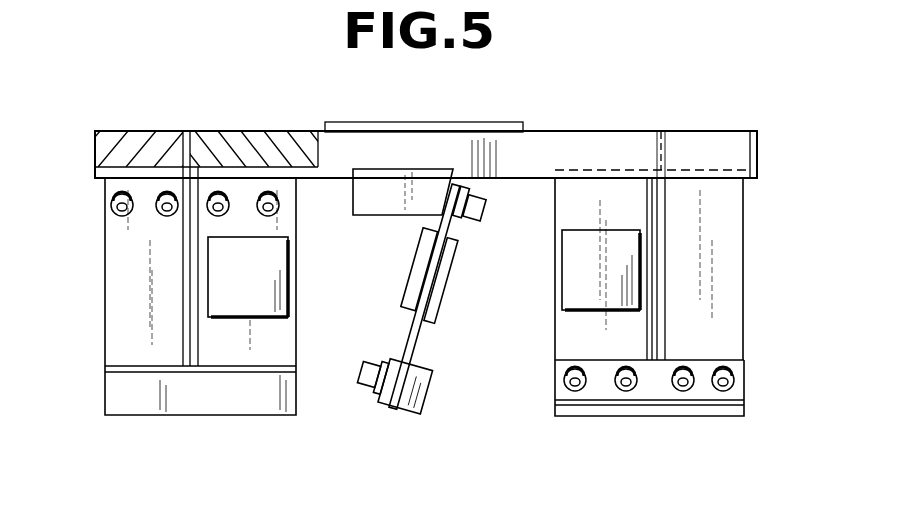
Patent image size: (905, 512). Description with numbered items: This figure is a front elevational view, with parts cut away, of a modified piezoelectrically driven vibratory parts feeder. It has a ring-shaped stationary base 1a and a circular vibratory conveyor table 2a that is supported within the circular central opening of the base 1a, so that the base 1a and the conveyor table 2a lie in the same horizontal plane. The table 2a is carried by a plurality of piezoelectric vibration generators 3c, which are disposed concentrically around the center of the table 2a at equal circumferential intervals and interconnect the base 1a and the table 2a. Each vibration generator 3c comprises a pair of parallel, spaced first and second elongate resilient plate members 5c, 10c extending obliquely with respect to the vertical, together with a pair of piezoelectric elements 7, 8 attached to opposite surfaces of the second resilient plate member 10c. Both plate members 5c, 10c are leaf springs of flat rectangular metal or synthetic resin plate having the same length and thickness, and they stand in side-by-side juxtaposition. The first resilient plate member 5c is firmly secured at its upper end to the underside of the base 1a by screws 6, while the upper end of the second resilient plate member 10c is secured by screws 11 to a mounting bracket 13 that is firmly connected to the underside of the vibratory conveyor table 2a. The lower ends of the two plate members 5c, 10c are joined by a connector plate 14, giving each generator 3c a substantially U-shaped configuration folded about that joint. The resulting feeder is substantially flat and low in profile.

The ring-shaped stationary base 1a is at (116, 142).
The circular vibratory conveyor table 2a is at (262, 146).
The piezoelectric vibration generator 3c is at (106, 240).
The first elongate resilient plate member 5c is at (118, 296).
The screws 6 is at (110, 206).
The piezoelectric element 7 is at (268, 286).
The piezoelectric element 8 is at (407, 283).
The second elongate resilient plate member 10c is at (281, 344).
The screws 11 is at (218, 196).
The mounting bracket 13 is at (384, 180).
The connector plate 14 is at (232, 398).